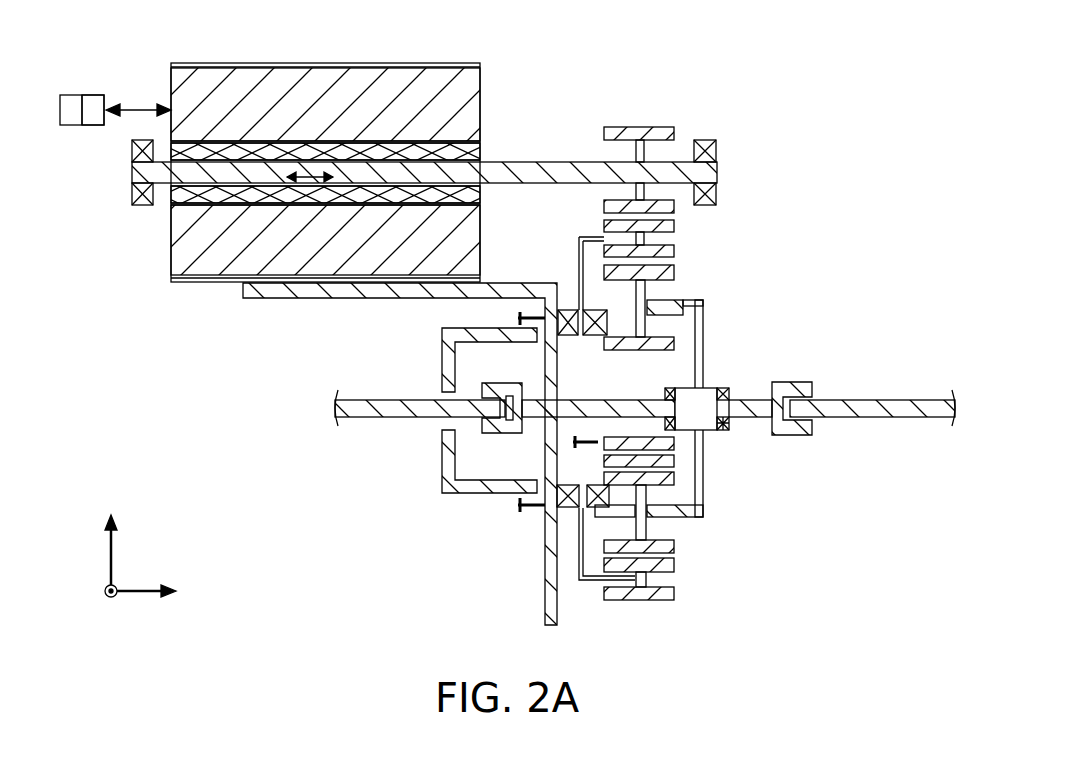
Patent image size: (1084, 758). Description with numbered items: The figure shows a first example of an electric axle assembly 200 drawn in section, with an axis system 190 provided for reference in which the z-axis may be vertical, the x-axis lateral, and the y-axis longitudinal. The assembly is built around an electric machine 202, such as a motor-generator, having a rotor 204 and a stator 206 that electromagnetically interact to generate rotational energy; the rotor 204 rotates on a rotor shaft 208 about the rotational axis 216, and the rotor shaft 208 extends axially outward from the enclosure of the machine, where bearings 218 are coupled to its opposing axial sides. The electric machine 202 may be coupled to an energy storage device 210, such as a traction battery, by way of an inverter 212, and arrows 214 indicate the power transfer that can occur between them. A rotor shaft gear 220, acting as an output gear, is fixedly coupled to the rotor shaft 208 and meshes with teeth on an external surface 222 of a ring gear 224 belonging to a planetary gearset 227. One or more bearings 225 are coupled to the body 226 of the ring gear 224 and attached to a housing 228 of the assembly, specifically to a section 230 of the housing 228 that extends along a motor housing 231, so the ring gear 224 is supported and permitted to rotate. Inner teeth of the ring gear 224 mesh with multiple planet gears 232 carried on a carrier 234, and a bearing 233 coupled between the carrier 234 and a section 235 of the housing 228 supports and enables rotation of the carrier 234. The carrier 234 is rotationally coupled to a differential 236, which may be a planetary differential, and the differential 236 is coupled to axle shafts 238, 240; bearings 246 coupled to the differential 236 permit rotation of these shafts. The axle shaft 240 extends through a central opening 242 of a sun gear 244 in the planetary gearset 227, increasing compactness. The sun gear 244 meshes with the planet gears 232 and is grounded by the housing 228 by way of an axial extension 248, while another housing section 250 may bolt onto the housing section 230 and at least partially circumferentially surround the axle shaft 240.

The axis system 190 is at (180, 531).
The electric axle assembly 200 is at (82, 62).
The electric machine 202 is at (146, 84).
The rotor 204 is at (470, 150).
The stator 206 is at (356, 114).
The rotor shaft 208 is at (470, 172).
The energy storage device 210 is at (80, 126).
The inverter 212 is at (93, 95).
The arrows 214 is at (131, 114).
The rotational axis 216 is at (307, 179).
The bearings 218 is at (146, 207).
The rotor shaft gear 220 is at (612, 128).
The external surface 222 is at (608, 206).
The ring gear 224 is at (682, 230).
The bearings 225 is at (574, 310).
The body 226 is at (578, 244).
The planetary gearset 227 is at (797, 246).
The housing 228 is at (410, 341).
The section of the housing 230 is at (505, 298).
The motor housing 231 is at (200, 284).
The planet gears 232 is at (665, 272).
The bearing 233 is at (588, 310).
The carrier 234 is at (703, 306).
The section of the housing 235 is at (568, 338).
The differential 236 is at (706, 389).
The axle shaft 238 is at (749, 418).
The axle shaft 240 is at (650, 414).
The central opening 242 is at (563, 423).
The sun gear 244 is at (658, 363).
The bearings 246 is at (723, 432).
The axial extension 248 is at (575, 443).
The housing section 250 is at (447, 492).